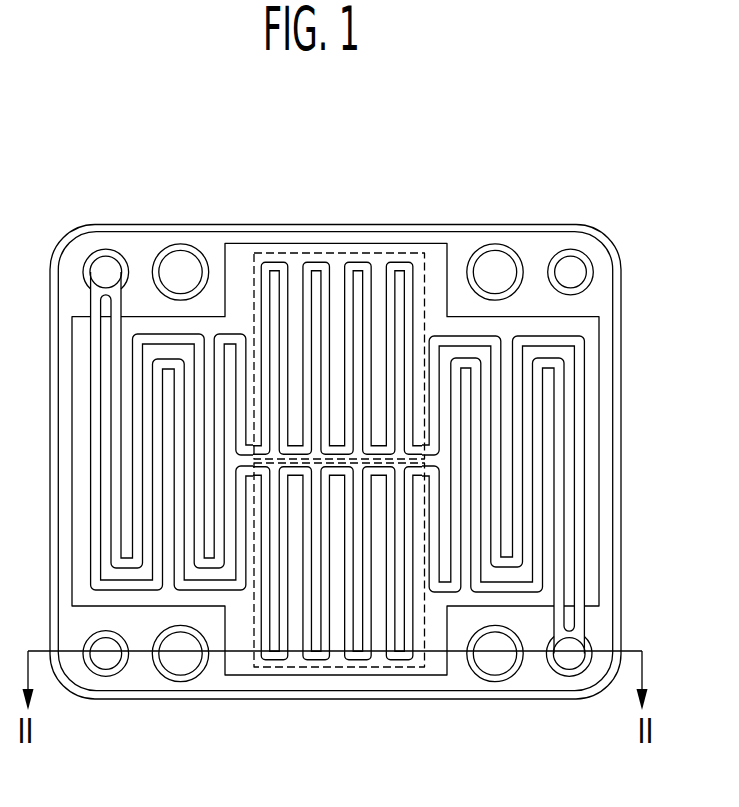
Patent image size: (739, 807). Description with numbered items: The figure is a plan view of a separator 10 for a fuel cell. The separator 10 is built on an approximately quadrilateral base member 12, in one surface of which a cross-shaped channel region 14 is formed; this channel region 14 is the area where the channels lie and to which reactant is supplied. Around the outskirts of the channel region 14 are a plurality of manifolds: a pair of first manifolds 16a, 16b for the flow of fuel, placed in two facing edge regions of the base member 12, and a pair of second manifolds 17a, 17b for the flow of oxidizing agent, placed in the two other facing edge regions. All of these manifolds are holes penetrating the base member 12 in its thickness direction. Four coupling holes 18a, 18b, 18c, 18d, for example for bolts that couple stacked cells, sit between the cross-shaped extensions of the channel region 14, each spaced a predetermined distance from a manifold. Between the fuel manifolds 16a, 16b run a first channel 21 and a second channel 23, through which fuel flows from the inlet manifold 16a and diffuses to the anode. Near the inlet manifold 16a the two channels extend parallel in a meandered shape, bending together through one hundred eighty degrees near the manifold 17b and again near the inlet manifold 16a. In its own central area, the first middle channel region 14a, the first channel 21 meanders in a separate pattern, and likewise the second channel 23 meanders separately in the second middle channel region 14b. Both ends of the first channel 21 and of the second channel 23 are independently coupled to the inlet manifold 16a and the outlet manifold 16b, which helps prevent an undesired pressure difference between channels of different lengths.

The separator 10 is at (583, 124).
The base member 12 is at (603, 343).
The channel region 14 is at (592, 382).
The first middle channel region 14a is at (345, 670).
The second middle channel region 14b is at (345, 253).
The first manifold (inlet manifold for fuel) 16a is at (106, 266).
The first manifold (outlet manifold for fuel) 16b is at (572, 658).
The second manifold (inlet manifold for oxidizing agent) 17a is at (571, 266).
The second manifold (outlet manifold for oxidizing agent) 17b is at (110, 657).
The coupling hole 18a is at (183, 266).
The coupling hole 18b is at (494, 266).
The coupling hole 18c is at (497, 663).
The coupling hole 18d is at (180, 662).
The first channel 21 is at (559, 492).
The second channel 23 is at (578, 533).